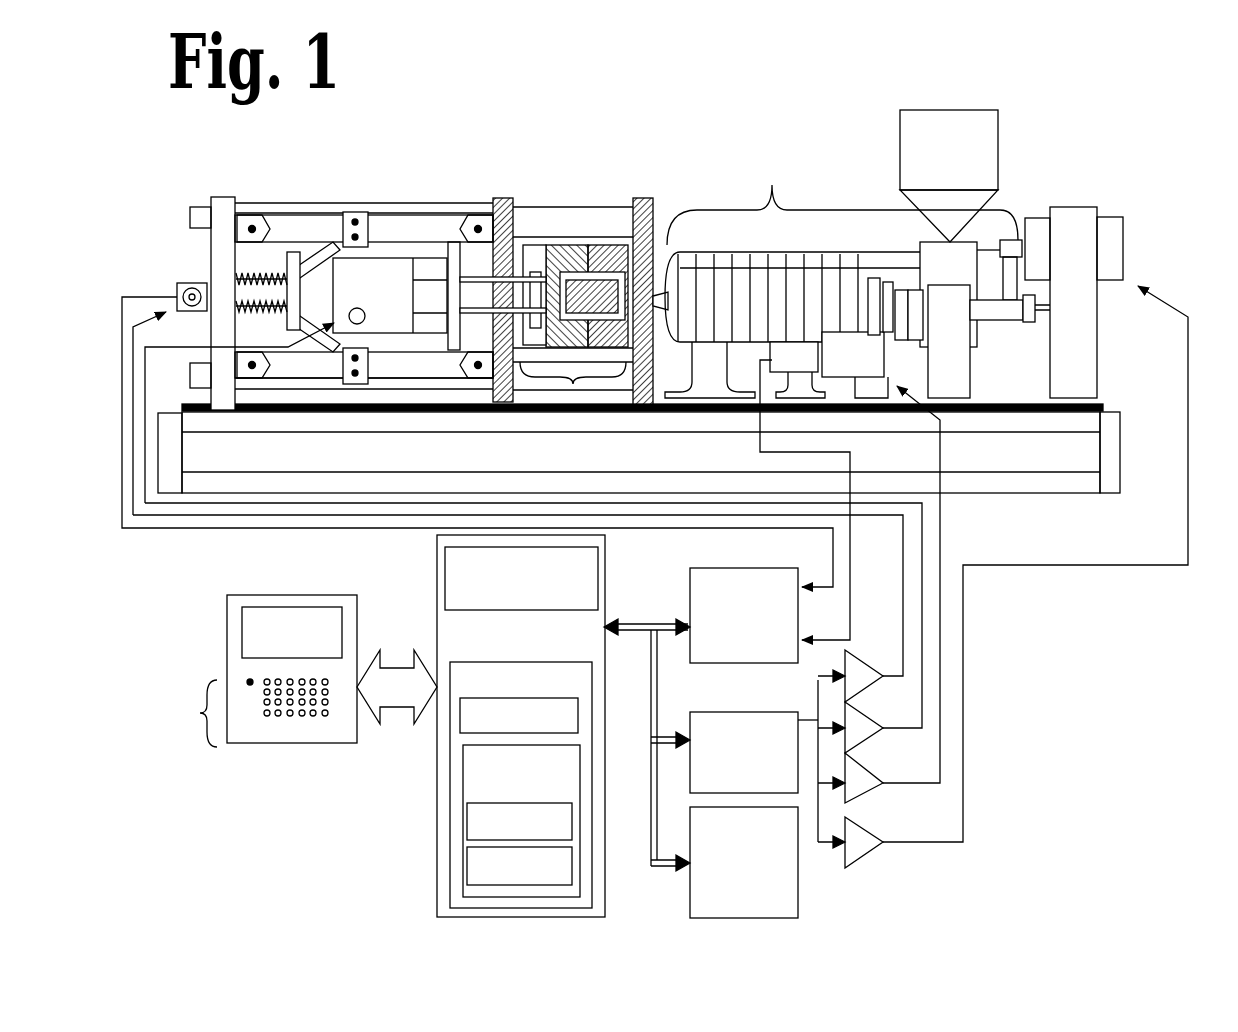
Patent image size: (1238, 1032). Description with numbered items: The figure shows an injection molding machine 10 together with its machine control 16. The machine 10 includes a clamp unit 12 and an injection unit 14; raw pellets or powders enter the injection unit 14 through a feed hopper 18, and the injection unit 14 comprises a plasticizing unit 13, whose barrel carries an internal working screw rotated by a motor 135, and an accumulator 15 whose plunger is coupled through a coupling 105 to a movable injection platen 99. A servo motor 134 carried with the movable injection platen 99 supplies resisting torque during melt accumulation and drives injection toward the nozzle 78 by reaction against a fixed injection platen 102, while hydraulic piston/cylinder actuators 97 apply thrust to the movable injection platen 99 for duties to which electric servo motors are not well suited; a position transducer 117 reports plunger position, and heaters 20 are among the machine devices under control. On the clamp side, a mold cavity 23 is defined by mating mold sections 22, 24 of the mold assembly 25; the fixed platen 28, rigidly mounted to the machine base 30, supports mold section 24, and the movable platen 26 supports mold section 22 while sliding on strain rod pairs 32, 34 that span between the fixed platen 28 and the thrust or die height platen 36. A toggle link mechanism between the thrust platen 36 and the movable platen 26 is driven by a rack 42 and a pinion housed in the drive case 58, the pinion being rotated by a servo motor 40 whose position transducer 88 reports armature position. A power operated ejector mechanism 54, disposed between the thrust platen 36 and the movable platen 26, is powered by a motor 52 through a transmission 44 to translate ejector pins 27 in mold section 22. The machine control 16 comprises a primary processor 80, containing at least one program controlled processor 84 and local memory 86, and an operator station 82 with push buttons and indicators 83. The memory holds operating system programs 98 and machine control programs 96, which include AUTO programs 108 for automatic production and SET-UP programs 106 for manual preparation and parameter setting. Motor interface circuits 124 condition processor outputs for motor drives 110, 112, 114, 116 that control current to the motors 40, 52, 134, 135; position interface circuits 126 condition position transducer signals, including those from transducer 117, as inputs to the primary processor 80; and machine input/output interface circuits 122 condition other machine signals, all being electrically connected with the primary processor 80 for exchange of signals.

The injection molding machine 10 is at (542, 105).
The clamp unit 12 is at (554, 141).
The plasticizing unit 13 is at (773, 180).
The injection unit 14 is at (745, 138).
The accumulator 15 is at (797, 262).
The machine control 16 is at (204, 563).
The feed hopper 18 is at (949, 176).
The heaters 20 is at (772, 353).
The mold section 22 is at (553, 240).
The mold cavity 23 is at (580, 240).
The mold section 24 is at (597, 240).
The mold assembly 25 is at (575, 384).
The movable platen 26 is at (503, 197).
The ejector pins 27 is at (560, 240).
The fixed platen 28 is at (642, 197).
The machine base 30 is at (368, 415).
The strain rod pair 32 is at (388, 212).
The strain rod pair 34 is at (417, 395).
The thrust or die height platen 36 is at (225, 203).
The motor 40 is at (200, 283).
The rack 42 is at (245, 278).
The transmission 44 is at (390, 295).
The motor 52 is at (362, 310).
The power operated ejector mechanism 54 is at (392, 232).
The drive case 58 is at (203, 283).
The nozzle 78 is at (662, 292).
The primary processor 80 is at (437, 630).
The operator station 82 is at (283, 605).
The push buttons and indicators 83 is at (198, 714).
The program controlled processor 84 is at (443, 578).
The memory 86 is at (467, 668).
The position transducer 88 is at (183, 288).
The machine control programs 96 is at (468, 757).
The piston/cylinder actuators 97 is at (1043, 315).
The operating system programs 98 is at (567, 718).
The movable injection platen 99 is at (880, 285).
The fixed injection platen 102 is at (942, 320).
The coupling 105 is at (870, 278).
The SET-UP programs 106 is at (472, 860).
The AUTO programs 108 is at (478, 822).
The motor drive 110 is at (853, 682).
The motor drive 112 is at (853, 734).
The motor drive 114 is at (853, 789).
The motor drive 116 is at (853, 848).
The position transducer 117 is at (797, 370).
The machine input/output interface circuits 122 is at (697, 878).
The motor interface circuits 124 is at (770, 733).
The position interface circuits 126 is at (732, 585).
The servo motor 134 is at (855, 365).
The motor 135 is at (1037, 225).